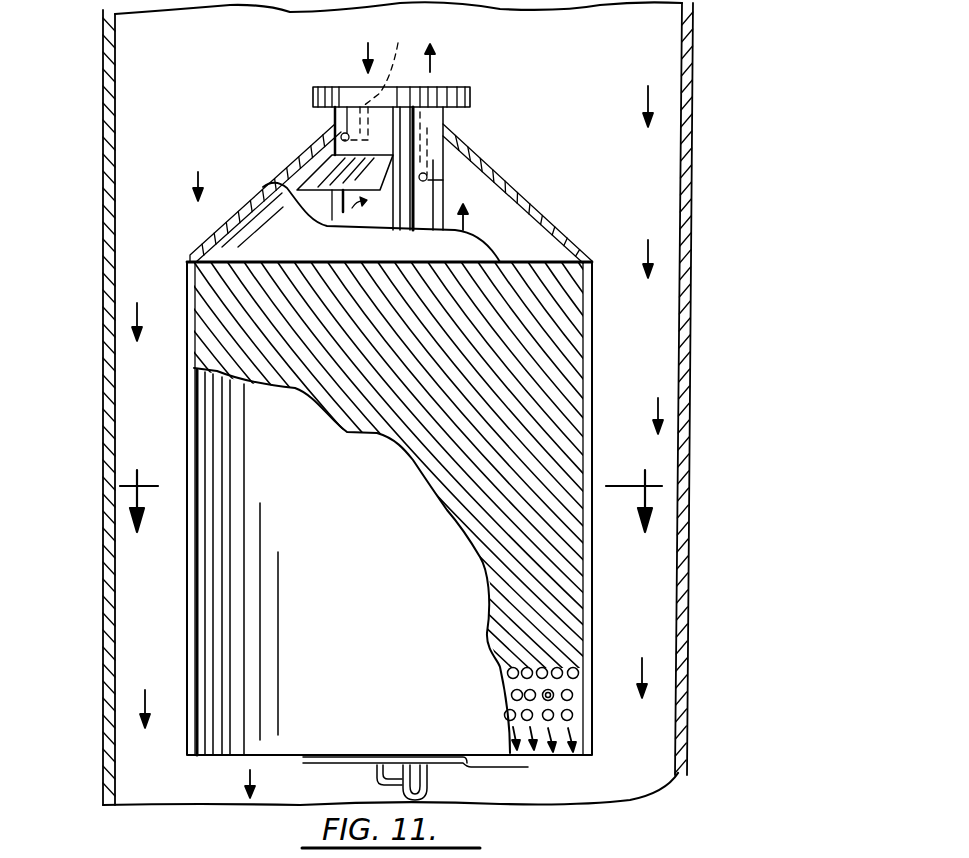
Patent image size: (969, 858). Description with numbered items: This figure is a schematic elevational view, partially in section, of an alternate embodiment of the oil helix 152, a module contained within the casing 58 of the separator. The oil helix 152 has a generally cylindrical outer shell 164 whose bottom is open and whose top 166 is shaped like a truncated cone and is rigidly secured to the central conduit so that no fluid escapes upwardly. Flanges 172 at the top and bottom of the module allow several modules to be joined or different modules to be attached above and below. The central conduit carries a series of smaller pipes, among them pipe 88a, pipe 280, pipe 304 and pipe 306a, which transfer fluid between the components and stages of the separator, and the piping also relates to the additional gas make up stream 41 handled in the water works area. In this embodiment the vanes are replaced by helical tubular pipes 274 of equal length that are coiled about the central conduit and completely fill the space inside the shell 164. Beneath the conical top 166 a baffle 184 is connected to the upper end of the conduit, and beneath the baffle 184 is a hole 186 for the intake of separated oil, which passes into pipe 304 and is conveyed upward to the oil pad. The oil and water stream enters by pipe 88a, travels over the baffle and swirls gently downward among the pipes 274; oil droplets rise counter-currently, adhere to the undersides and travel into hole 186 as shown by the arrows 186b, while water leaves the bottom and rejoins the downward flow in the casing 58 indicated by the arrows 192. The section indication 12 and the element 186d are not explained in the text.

The section line 12- 12 is at (391, 517).
The additional gas make up stream 41 is at (376, 772).
The casing 58 is at (686, 486).
The pipe 88a is at (382, 81).
The oil helix 152 is at (632, 357).
The outer shell 164 is at (252, 746).
The top 166 is at (207, 250).
The flange 172 is at (313, 97).
The baffle 184 is at (433, 180).
The hole 186 is at (447, 192).
The arrows 186b is at (458, 221).
The deflector plate 186d is at (312, 214).
The arrows 192 is at (656, 101).
The helical tubular pipes 274 is at (573, 605).
The pipe 280 is at (377, 789).
The pipe 304 is at (430, 127).
The pipe 306a is at (431, 793).